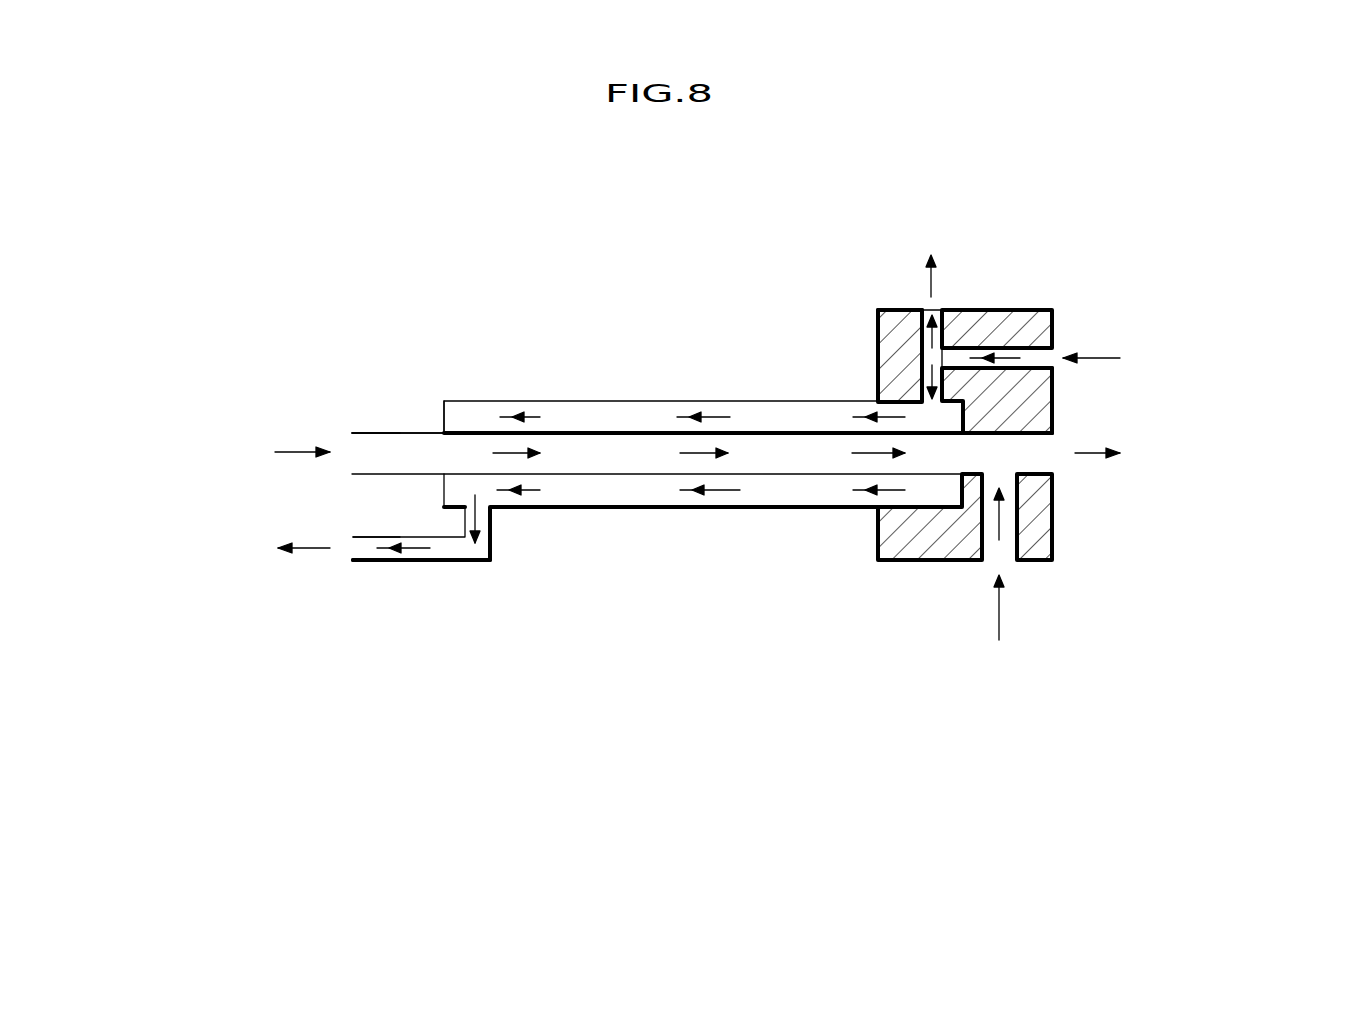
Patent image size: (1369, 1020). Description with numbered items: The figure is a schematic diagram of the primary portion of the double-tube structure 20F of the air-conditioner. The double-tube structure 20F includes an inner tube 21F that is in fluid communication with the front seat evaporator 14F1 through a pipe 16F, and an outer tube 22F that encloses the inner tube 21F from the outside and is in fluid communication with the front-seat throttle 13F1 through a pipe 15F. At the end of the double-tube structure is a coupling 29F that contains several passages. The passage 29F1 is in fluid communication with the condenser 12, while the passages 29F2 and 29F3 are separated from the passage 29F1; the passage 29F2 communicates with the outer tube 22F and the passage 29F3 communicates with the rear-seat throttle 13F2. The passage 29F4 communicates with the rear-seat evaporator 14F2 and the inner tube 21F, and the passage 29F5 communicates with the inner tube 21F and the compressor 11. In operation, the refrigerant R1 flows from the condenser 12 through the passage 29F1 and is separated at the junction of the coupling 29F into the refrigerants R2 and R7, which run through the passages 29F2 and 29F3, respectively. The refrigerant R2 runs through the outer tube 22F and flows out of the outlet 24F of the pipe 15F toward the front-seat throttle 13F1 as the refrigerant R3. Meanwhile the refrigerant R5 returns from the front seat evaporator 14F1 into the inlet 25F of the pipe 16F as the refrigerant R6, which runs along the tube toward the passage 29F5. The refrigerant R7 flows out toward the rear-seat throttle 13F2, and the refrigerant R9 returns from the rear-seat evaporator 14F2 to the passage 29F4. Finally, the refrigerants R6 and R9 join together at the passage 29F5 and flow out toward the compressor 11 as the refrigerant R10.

The inner tube 21F is at (618, 450).
The outer tube 22F is at (623, 495).
The refrigerant R6 is at (682, 453).
The refrigerant R2 is at (703, 415).
The double-tube structure 20F is at (1075, 295).
The coupling 29F is at (1048, 306).
The passage 29F1 is at (1053, 353).
The passage 29F2 is at (924, 368).
The passage 29F3 is at (924, 328).
The passage 29F4 is at (990, 562).
The passage 29F5 is at (1055, 432).
The refrigerant R1 is at (1100, 357).
The refrigerant R3 is at (305, 552).
The refrigerant R5 is at (298, 448).
The refrigerant R7 is at (943, 340).
The refrigerant R9 is at (1000, 607).
The refrigerant R10 is at (995, 517).
The condenser 12 is at (1235, 358).
The compressor 11 is at (1214, 453).
The front-seat throttle 13F1 is at (189, 542).
The rear-seat throttle 13F2 is at (929, 253).
The front seat evaporator 14F1 is at (171, 454).
The rear-seat evaporator 14F2 is at (999, 665).
The inlet 25F is at (357, 433).
The pipe 16F is at (420, 433).
The outlet 24F is at (365, 561).
The pipe 15F is at (447, 561).